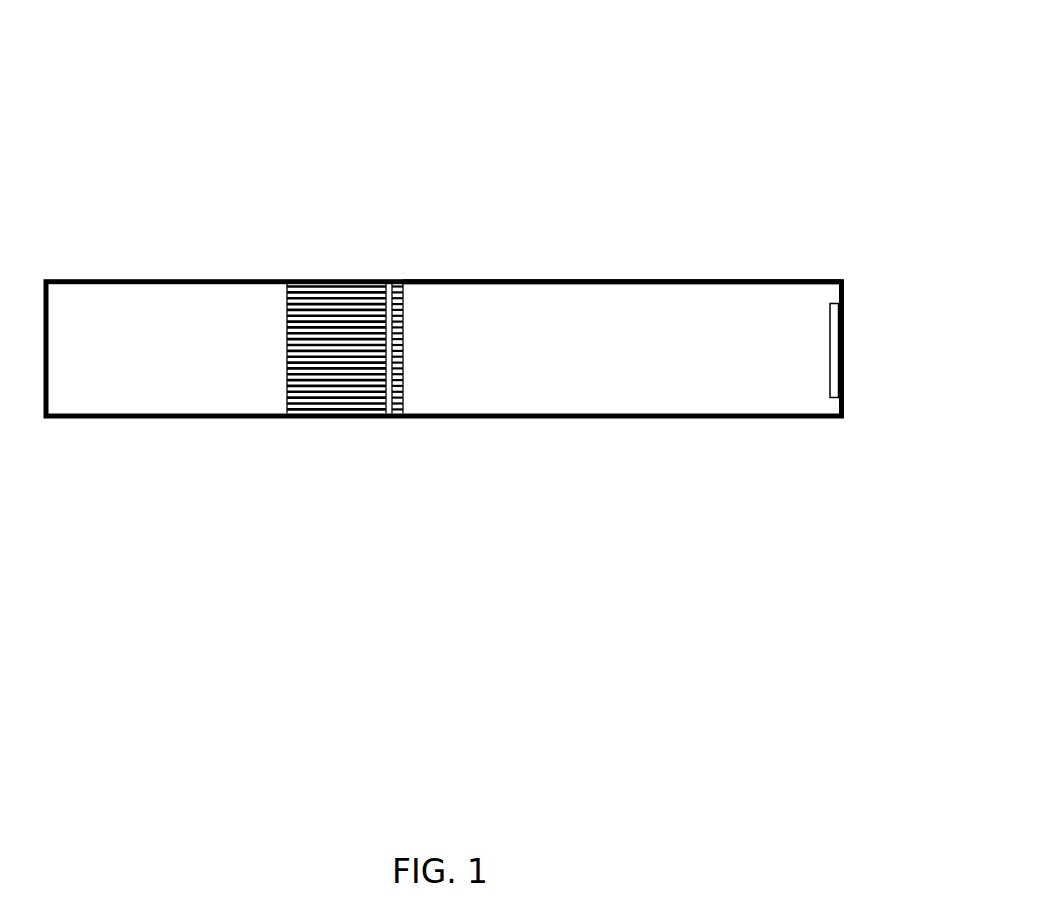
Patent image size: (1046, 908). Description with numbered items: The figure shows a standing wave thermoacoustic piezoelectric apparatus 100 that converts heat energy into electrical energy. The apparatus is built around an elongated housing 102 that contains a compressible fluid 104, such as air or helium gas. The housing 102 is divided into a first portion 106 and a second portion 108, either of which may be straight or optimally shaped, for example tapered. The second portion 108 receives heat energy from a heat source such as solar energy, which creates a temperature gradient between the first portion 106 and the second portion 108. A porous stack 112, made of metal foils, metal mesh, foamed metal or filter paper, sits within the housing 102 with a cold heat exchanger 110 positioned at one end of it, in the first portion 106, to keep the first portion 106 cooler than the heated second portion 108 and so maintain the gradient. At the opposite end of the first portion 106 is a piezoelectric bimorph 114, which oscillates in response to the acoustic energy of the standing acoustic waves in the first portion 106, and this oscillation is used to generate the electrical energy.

The standing wave thermoacoustic piezoelectric apparatus 100 is at (732, 118).
The housing 102 is at (444, 311).
The compressible fluid 104 is at (622, 264).
The first portion 106 is at (620, 349).
The second portion 108 is at (168, 349).
The cold heat exchanger 110 is at (426, 313).
The porous stack 112 is at (336, 313).
The piezoelectric bimorph 114 is at (865, 349).